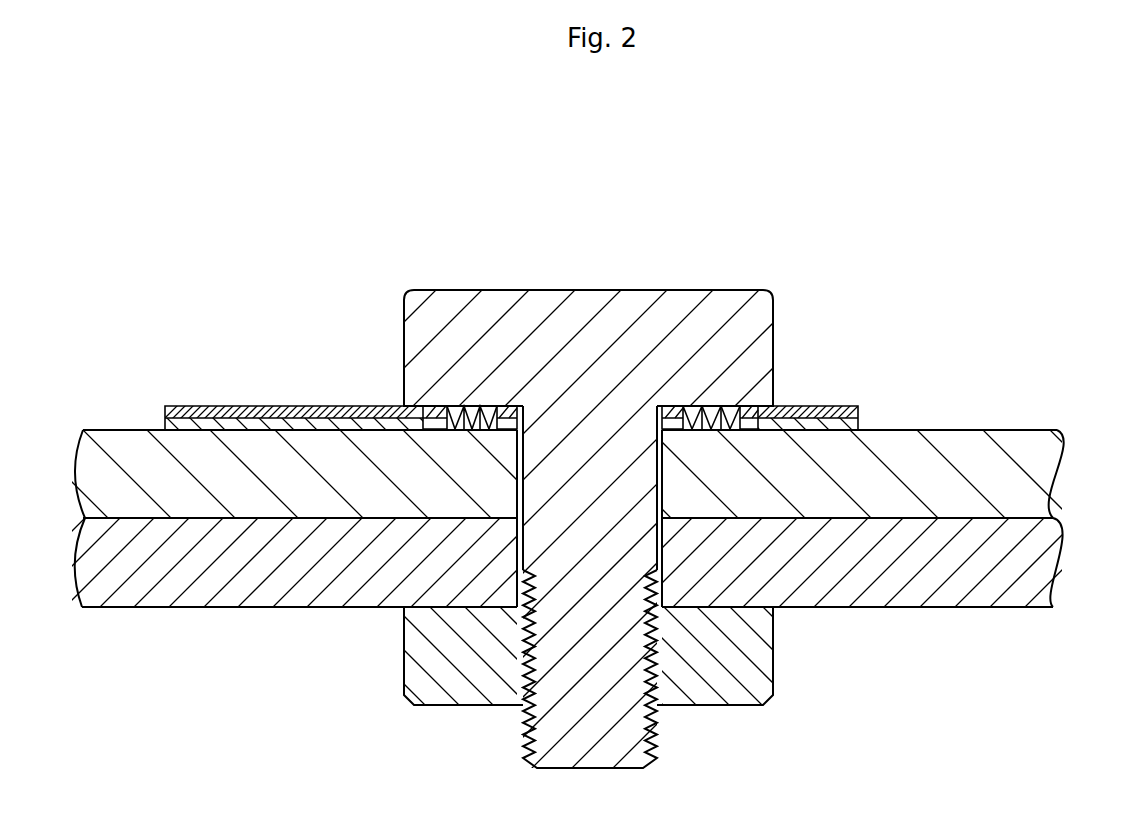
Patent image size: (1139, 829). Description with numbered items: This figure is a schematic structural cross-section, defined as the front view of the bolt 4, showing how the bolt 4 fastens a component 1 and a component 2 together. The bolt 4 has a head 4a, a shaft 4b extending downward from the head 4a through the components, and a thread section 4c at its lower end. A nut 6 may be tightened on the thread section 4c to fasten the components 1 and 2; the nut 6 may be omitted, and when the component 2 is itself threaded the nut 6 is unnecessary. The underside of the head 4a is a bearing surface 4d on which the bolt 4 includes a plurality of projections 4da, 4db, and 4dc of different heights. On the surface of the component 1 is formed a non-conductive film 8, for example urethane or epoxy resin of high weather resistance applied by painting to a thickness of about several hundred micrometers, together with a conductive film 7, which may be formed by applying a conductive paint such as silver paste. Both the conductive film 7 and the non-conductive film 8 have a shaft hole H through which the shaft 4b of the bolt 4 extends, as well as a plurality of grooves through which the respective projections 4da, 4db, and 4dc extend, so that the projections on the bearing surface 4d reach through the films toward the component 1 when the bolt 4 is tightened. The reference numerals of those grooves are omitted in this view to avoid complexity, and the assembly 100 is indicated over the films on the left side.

The component 1 is at (1048, 470).
The component 2 is at (1043, 558).
The bolt 4 is at (569, 414).
The head 4a is at (775, 355).
The shaft 4b is at (500, 492).
The thread section 4c is at (658, 722).
The bearing surface 4d is at (400, 406).
The projection 4da is at (687, 417).
The projection 4db is at (715, 422).
The projection 4dc is at (740, 413).
The shaft hole H is at (746, 410).
The nut 6 is at (768, 653).
The conductive film 7 is at (828, 409).
The non-conductive film 8 is at (860, 425).
The sheet member 100 is at (237, 370).